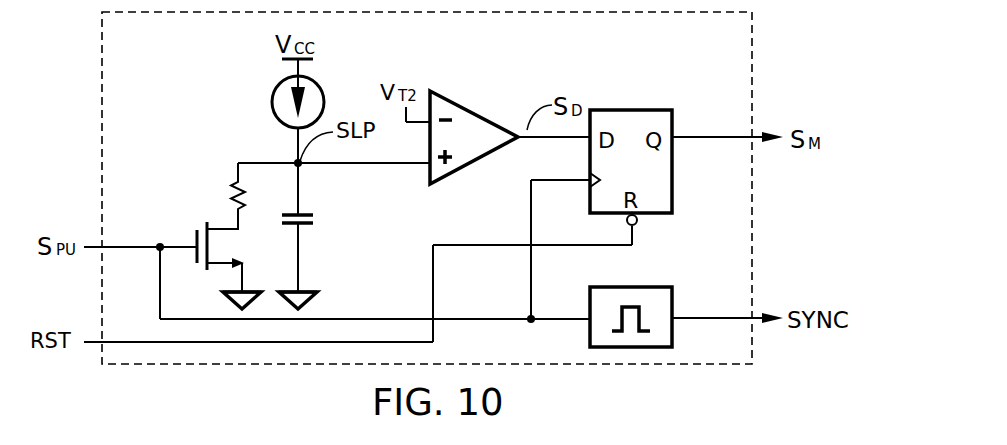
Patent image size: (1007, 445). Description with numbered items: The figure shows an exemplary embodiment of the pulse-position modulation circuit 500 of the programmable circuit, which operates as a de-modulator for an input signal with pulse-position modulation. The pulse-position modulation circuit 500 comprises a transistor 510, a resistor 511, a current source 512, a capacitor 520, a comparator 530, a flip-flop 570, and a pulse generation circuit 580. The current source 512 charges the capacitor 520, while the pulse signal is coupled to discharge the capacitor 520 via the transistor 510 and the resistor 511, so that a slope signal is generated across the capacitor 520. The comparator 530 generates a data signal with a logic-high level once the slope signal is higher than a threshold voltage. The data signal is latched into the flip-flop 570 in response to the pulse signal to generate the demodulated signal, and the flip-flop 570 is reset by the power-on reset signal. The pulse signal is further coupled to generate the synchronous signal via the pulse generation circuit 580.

The pulse-position modulation circuit 500 is at (752, 57).
The transistor 510 is at (195, 228).
The resistor 511 is at (229, 196).
The current source 512 is at (271, 106).
The capacitor 520 is at (314, 216).
The comparator 530 is at (455, 100).
The flip-flop 570 is at (628, 109).
The pulse generation circuit 580 is at (657, 286).